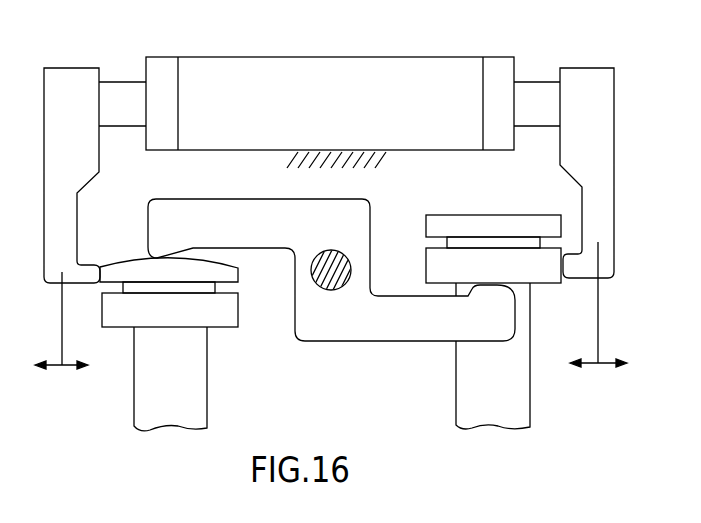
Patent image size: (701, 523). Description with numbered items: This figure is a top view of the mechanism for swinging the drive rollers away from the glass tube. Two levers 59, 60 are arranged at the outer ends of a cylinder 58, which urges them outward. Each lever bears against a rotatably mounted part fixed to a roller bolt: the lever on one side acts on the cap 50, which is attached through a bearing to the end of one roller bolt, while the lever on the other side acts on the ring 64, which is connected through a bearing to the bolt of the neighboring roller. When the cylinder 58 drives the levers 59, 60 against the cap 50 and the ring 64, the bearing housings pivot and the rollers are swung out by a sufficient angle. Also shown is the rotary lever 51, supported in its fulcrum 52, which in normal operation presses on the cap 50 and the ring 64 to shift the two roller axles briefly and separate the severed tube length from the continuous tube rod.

The cap 50 is at (232, 273).
The lever 51 is at (257, 210).
The fulcrum 52 is at (344, 251).
The cylinder 58 is at (336, 70).
The lever 59 is at (70, 80).
The lever 60 is at (588, 82).
The ring 64 is at (545, 278).